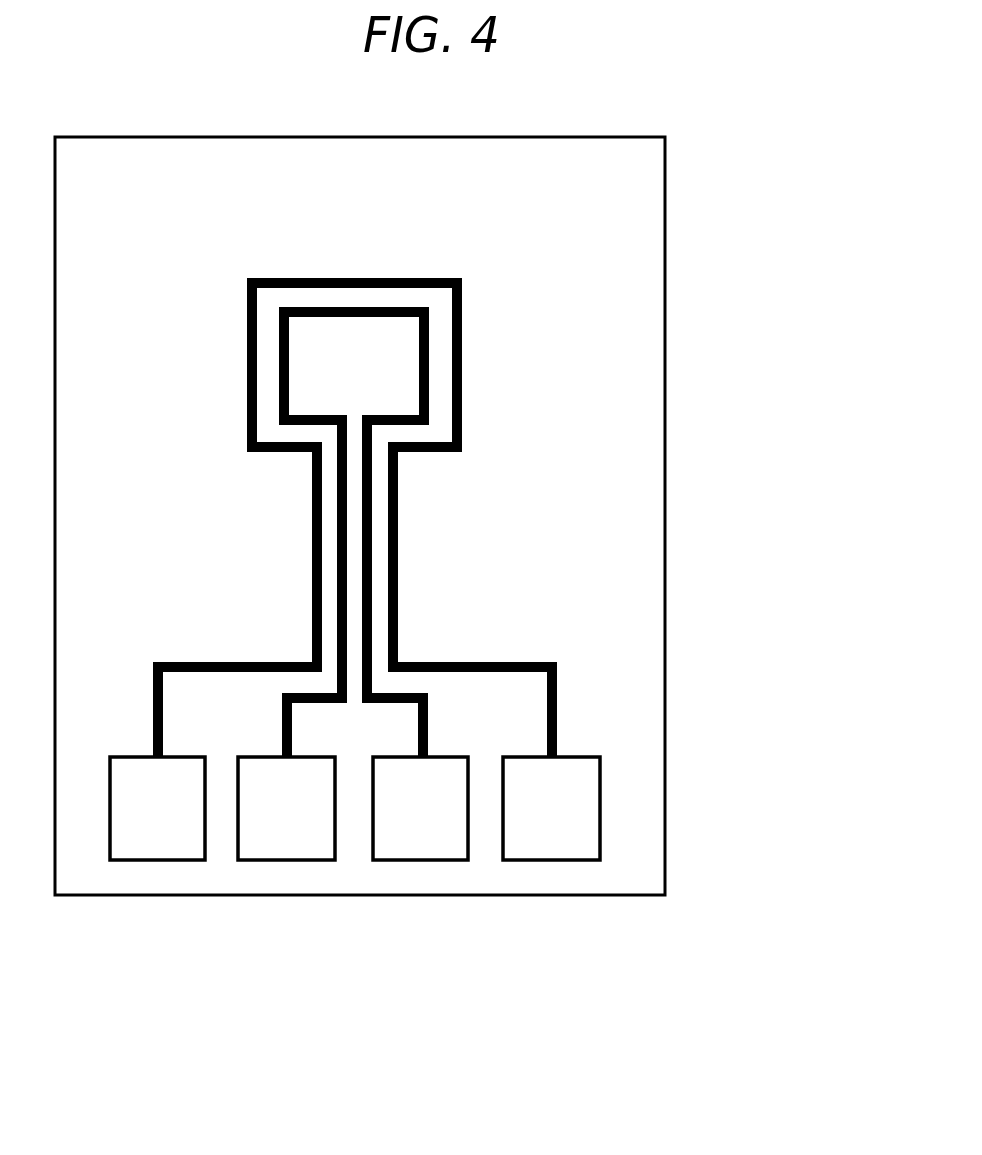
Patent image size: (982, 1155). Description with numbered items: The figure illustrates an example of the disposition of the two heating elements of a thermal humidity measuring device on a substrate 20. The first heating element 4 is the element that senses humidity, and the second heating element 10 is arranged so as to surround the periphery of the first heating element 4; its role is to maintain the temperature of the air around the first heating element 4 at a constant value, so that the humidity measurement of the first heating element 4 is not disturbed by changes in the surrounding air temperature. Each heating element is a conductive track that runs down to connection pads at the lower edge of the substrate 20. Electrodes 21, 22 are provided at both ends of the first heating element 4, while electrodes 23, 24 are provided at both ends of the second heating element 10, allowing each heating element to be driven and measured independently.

The first heating element 4 is at (282, 362).
The second heating element 10 is at (462, 365).
The substrate 20 is at (665, 320).
The electrode 21 is at (287, 860).
The electrode 22 is at (419, 860).
The electrode 23 is at (157, 860).
The electrode 24 is at (550, 860).